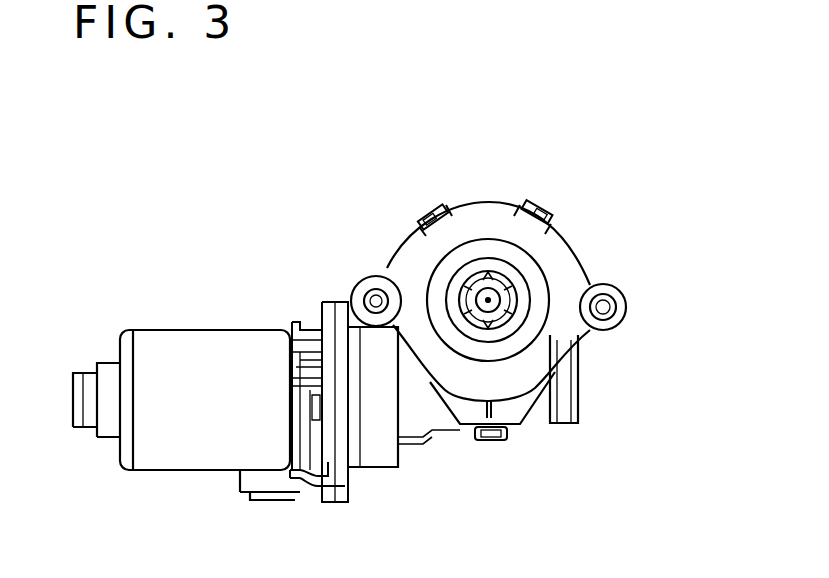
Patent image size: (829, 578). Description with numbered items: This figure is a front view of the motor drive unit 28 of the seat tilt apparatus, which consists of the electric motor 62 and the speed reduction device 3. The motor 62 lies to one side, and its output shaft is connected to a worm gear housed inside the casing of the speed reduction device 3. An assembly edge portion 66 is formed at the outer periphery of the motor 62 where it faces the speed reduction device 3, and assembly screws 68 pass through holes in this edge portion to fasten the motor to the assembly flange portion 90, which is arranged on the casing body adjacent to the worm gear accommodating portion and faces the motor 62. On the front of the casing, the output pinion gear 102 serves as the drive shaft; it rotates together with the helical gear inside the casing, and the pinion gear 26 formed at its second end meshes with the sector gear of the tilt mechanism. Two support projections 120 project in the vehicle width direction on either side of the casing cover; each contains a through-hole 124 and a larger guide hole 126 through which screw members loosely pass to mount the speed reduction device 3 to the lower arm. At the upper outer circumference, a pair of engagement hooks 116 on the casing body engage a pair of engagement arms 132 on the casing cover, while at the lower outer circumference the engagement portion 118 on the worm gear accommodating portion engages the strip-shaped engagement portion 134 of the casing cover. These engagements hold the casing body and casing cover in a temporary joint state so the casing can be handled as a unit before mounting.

The speed reduction device 3 is at (594, 226).
The pinion gear 26 is at (512, 320).
The motor drive unit 28 is at (256, 166).
The electric motor 62 is at (214, 345).
The assembly edge portion 66 is at (335, 455).
The assembly screws 68 is at (300, 407).
The assembly flange portion 90 is at (388, 447).
The output pinion gear 102 is at (488, 298).
The engagement hooks 116 is at (424, 210).
The engagement portion 118 is at (487, 442).
The support projections 120 is at (357, 292).
The through-holes 124 is at (607, 311).
The guide holes 126 is at (379, 296).
The engagement arms 132 is at (446, 208).
The strip-shaped engagement portion 134 is at (512, 432).